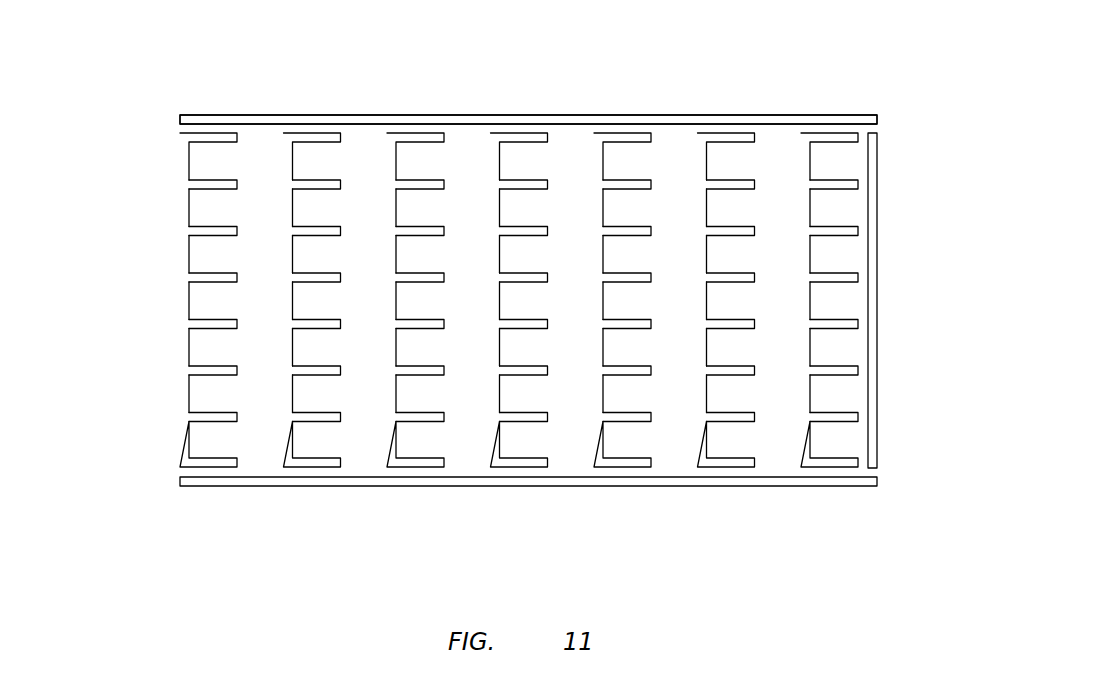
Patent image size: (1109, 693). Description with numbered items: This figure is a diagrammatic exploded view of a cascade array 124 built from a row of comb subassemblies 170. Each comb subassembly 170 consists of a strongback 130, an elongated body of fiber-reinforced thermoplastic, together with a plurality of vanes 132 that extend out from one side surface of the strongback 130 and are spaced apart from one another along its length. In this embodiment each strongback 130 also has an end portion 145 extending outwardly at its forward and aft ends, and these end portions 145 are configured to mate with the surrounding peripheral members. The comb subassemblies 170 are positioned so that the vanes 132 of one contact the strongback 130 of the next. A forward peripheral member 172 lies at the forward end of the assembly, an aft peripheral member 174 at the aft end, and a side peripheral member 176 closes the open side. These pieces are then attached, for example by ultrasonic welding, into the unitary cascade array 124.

The cascade array 124 is at (870, 80).
The strongback 130 is at (820, 133).
The vane 132 is at (335, 236).
The end portion 145 is at (515, 133).
The comb subassembly 170 is at (303, 128).
The forward peripheral member 172 is at (660, 486).
The aft peripheral member 174 is at (427, 115).
The side peripheral member 176 is at (877, 358).